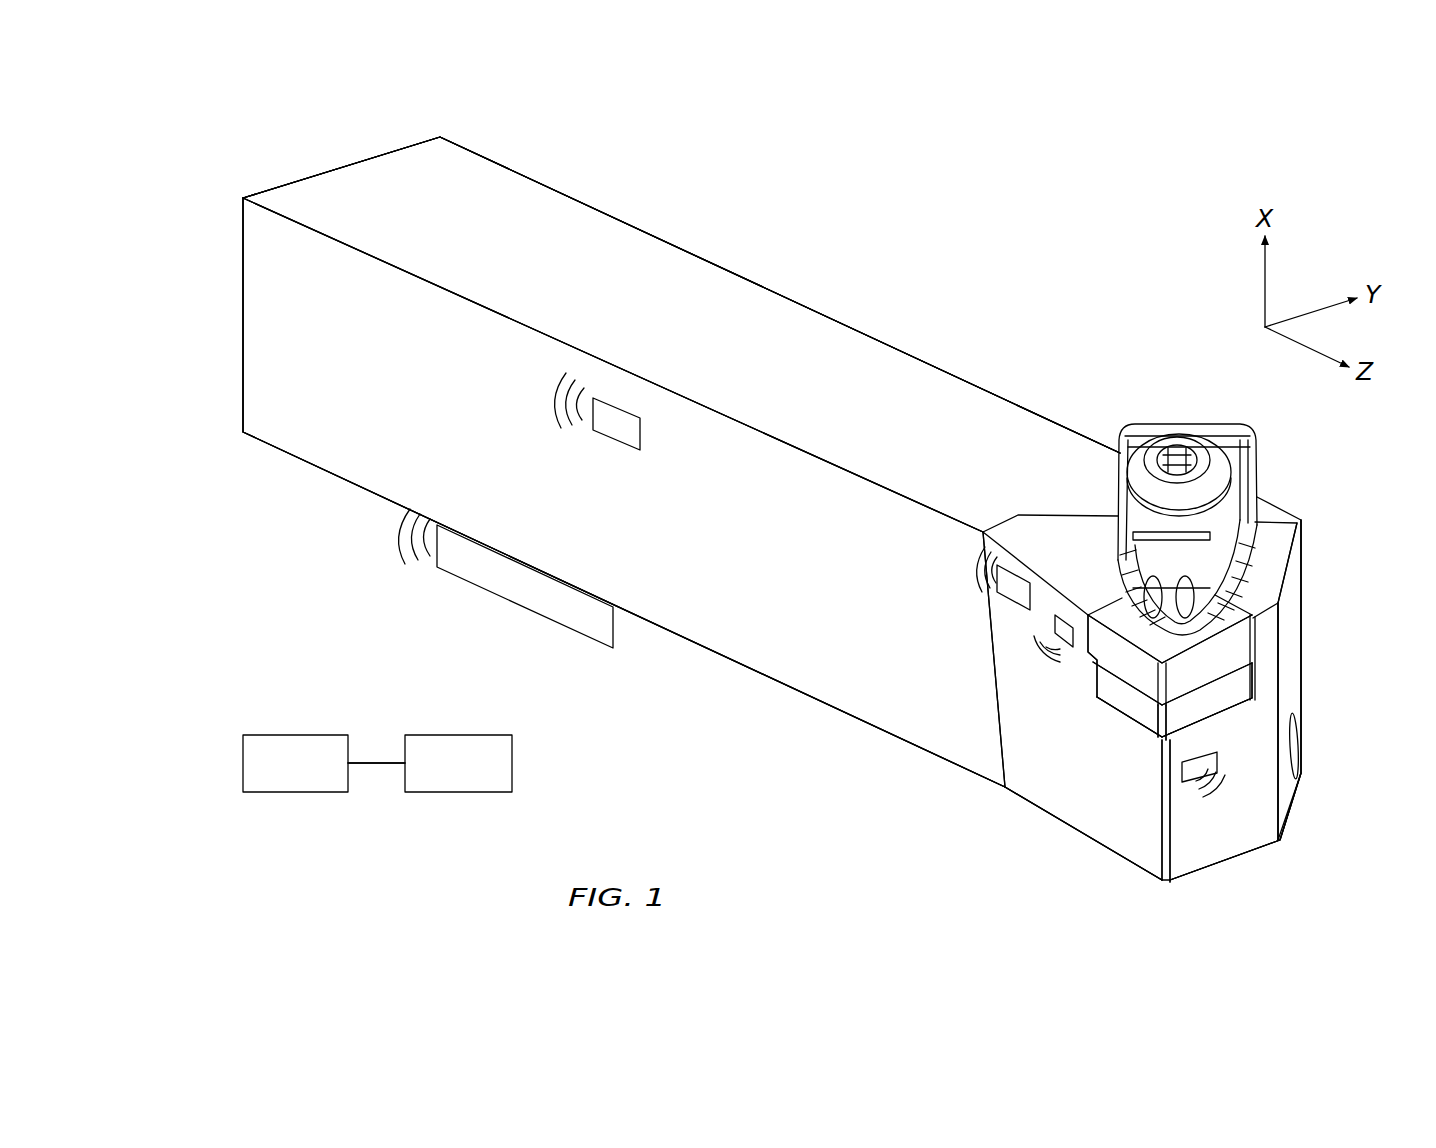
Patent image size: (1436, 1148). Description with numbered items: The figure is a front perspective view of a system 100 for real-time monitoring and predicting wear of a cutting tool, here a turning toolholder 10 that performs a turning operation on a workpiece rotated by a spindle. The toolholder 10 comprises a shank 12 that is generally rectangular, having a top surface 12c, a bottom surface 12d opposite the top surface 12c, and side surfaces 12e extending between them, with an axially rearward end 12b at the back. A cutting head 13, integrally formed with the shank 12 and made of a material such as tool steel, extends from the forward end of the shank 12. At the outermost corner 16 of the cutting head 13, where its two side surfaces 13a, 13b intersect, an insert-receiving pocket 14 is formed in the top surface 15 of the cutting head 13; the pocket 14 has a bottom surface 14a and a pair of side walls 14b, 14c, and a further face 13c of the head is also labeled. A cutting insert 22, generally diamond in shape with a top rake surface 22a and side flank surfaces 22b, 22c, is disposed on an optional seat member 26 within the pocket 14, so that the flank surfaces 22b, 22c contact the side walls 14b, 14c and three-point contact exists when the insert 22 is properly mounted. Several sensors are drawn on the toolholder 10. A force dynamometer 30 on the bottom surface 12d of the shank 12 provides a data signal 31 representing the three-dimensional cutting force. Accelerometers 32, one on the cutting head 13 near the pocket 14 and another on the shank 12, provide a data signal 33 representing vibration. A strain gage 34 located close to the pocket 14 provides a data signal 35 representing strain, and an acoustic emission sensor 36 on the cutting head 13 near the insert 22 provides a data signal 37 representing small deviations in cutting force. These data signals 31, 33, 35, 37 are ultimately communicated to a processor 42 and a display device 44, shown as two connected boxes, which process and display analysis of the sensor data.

The turning toolholder 10 is at (942, 212).
The shank 12 is at (651, 226).
The axially rearward end 12b is at (401, 136).
The top surface 12c is at (731, 301).
The bottom surface 12d is at (758, 673).
The side surfaces 12e is at (270, 256).
The cutting head 13 is at (1313, 573).
The side surface of the cutting head 13a is at (1042, 775).
The side surface of the cutting head 13b is at (1244, 831).
The chamfer surface of head 13c is at (1296, 688).
The insert-receiving pocket 14 is at (1117, 699).
The bottom surface 14a is at (1122, 721).
The side wall 14b is at (1115, 661).
The side wall 14c is at (1245, 641).
The top surface of the cutting head 15 is at (1077, 520).
The outermost corner 16 is at (1160, 774).
The cutting insert 22 is at (1224, 681).
The top rake surface 22a is at (1109, 608).
The side flank surface 22b is at (1117, 693).
The side flank surface 22c is at (1229, 656).
The seat member 26 is at (1213, 719).
The force dynamometer 30 is at (467, 583).
The data signal 31 is at (396, 529).
The accelerometer 32 is at (623, 444).
The data signal 33 is at (548, 397).
The strain gage 34 is at (1182, 783).
The data signal 35 is at (1206, 804).
The acoustic emission sensor 36 is at (1050, 622).
The data signal 37 is at (1031, 652).
The processor 42 is at (281, 793).
The display device 44 is at (441, 793).
The system 100 is at (1135, 192).